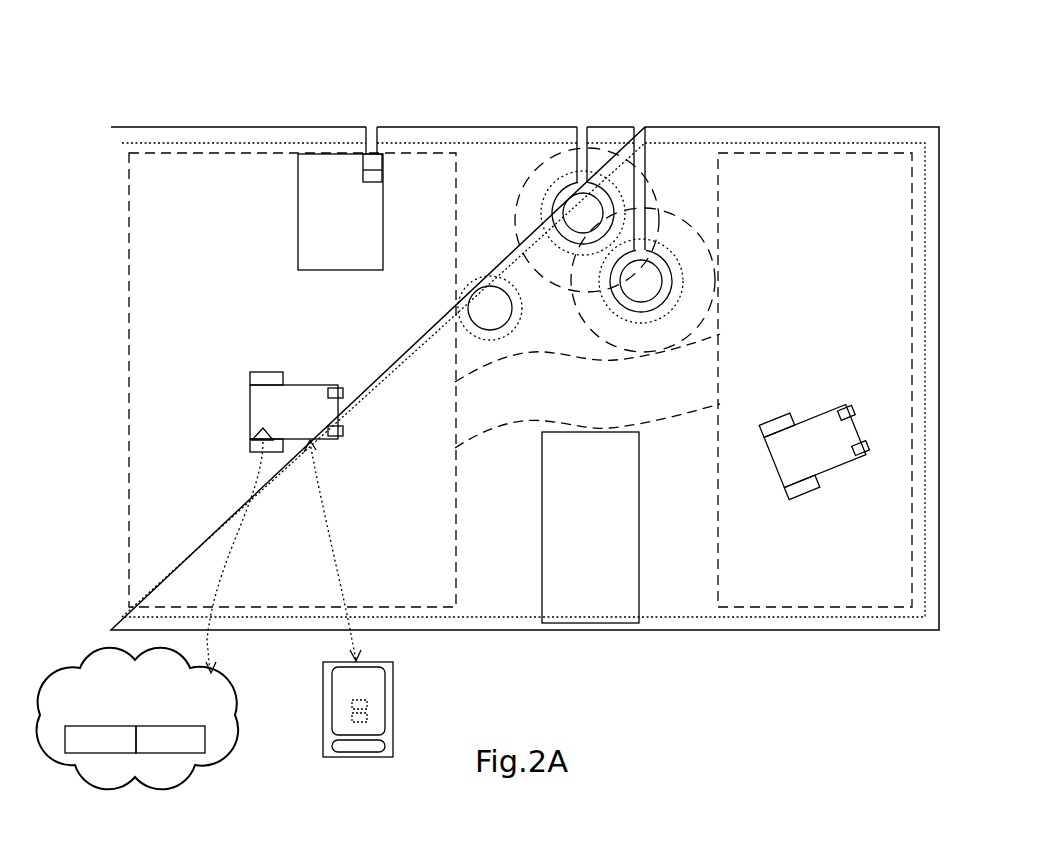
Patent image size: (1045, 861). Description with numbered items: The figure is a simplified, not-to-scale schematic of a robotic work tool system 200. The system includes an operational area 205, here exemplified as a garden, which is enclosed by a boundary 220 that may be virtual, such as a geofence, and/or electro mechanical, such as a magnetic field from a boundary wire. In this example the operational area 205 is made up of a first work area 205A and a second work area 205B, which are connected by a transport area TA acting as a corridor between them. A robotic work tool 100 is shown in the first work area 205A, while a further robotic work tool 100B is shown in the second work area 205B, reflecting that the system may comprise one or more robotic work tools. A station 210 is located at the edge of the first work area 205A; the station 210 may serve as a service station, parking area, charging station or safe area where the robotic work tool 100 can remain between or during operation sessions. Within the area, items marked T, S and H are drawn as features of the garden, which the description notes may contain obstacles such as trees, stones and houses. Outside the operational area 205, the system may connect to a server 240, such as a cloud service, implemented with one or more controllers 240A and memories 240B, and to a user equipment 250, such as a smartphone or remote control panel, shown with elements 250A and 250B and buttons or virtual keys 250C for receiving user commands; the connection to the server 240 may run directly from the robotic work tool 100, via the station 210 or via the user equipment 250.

The robotic work tool system 200 is at (397, 122).
The operational area 205 is at (208, 138).
The first work area 205A is at (166, 312).
The second work area 205B is at (853, 553).
The station 210 is at (340, 212).
The boundary 220 is at (868, 127).
The robotic work tool 100 is at (296, 412).
The second mobile robot 100B is at (817, 445).
The server 240 is at (138, 719).
The controller 240A is at (100, 739).
The memory 240B is at (170, 739).
The user equipment 250 is at (320, 711).
The device display element A 250A is at (348, 705).
The device display element B 250B is at (348, 718).
The buttons or virtual keys 250C is at (352, 748).
The target / tree T is at (615, 250).
The sensor / sprinkler S is at (490, 308).
The transport area TA is at (587, 391).
The hazard / house H is at (590, 527).